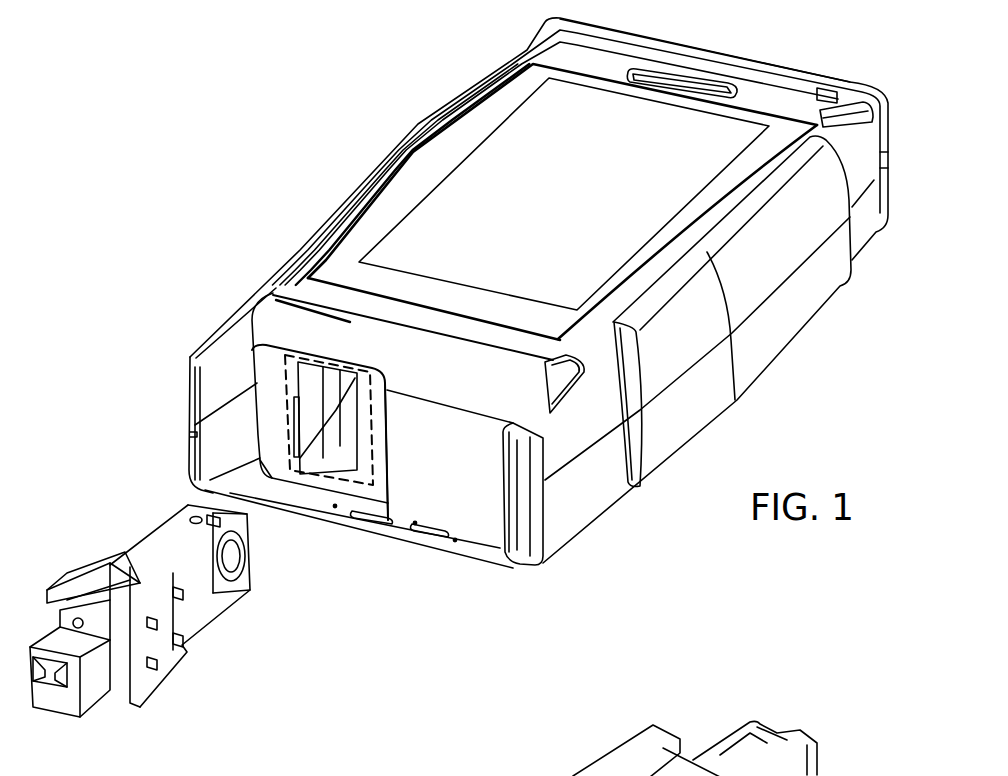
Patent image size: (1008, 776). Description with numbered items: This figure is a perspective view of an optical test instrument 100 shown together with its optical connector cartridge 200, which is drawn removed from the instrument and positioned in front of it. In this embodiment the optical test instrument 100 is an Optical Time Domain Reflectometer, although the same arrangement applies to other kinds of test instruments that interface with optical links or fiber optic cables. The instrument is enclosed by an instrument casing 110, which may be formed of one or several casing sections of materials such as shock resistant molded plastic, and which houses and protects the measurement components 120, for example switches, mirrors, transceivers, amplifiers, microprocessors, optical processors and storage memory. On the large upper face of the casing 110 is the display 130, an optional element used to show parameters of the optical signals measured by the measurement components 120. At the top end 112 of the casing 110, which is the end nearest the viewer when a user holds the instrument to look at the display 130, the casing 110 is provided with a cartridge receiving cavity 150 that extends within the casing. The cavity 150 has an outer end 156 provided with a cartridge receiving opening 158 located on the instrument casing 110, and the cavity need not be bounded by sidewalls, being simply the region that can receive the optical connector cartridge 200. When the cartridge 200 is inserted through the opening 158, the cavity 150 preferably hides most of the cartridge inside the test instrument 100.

The optical test instrument 100 is at (503, 317).
The instrument casing 110 is at (592, 492).
The top end 112 is at (467, 480).
The measurement components 120 is at (697, 145).
The display 130 is at (510, 157).
The cartridge receiving cavity 150 is at (349, 428).
The outer end 156 is at (257, 430).
The cartridge receiving opening 158 is at (388, 432).
The optical connector cartridge 200 is at (221, 643).